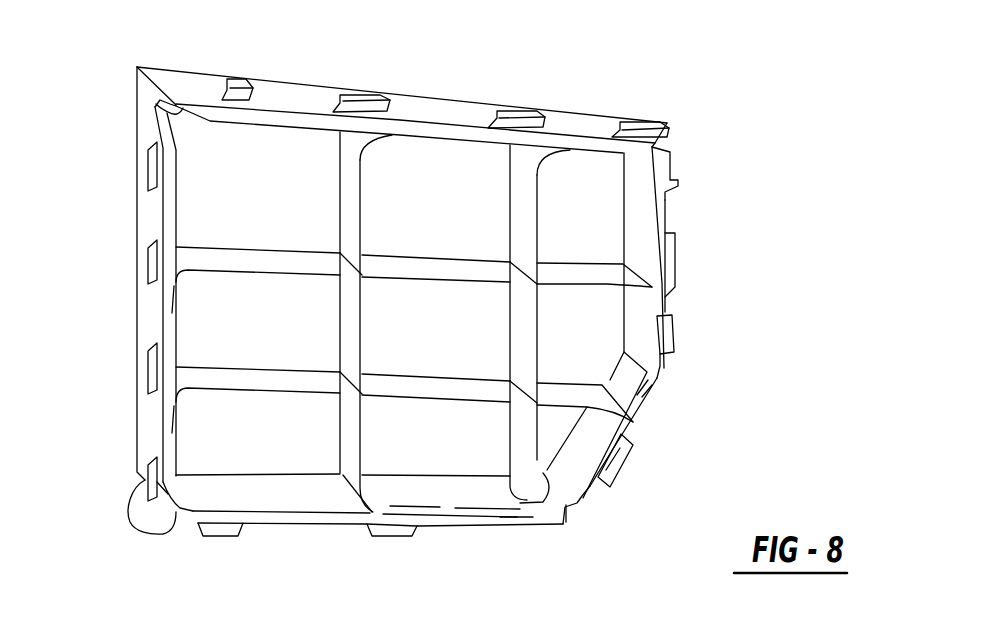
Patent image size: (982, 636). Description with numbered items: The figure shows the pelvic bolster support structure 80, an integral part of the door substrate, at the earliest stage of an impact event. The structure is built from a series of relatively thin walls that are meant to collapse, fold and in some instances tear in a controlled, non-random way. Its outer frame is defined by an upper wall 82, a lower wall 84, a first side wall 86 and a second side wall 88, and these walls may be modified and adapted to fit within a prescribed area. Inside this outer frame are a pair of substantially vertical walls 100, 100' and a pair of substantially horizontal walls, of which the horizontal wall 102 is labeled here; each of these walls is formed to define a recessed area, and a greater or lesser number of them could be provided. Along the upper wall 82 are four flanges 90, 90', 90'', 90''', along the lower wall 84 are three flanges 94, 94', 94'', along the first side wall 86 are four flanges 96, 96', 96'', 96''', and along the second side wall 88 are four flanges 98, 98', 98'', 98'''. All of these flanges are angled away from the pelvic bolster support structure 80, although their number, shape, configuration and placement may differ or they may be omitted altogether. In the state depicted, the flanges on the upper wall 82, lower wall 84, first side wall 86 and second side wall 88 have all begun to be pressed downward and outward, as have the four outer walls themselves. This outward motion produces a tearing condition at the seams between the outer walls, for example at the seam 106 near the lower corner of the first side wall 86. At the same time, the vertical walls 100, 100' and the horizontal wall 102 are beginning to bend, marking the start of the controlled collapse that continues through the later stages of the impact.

The pelvic bolster support structure 80 is at (455, 107).
The upper wall 82 is at (280, 95).
The lower wall 84 is at (282, 502).
The first side wall 86 is at (150, 302).
The second side wall 88 is at (633, 317).
The flange 90 is at (242, 52).
The flange 90' is at (383, 64).
The flange 90'' is at (526, 72).
The flange 90''' is at (656, 94).
The flange 94 is at (242, 571).
The flange 94' is at (415, 569).
The flange 94'' is at (626, 535).
The flange 96 is at (93, 156).
The flange 96' is at (90, 247).
The flange 96'' is at (97, 399).
The flange 96''' is at (113, 510).
The flange 98 is at (688, 160).
The flange 98' is at (704, 256).
The flange 98'' is at (697, 383).
The flange 98''' is at (664, 479).
The vertical wall 100 is at (312, 322).
The vertical wall 100' is at (623, 324).
The horizontal wall 102 is at (242, 260).
The seam 106 is at (177, 510).